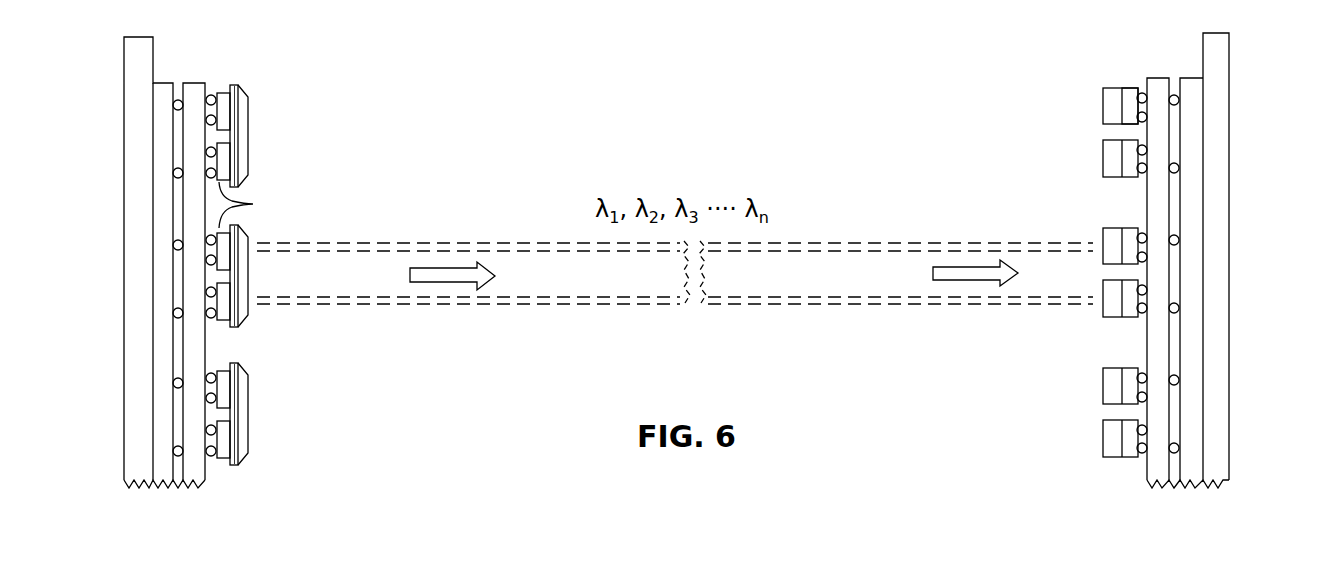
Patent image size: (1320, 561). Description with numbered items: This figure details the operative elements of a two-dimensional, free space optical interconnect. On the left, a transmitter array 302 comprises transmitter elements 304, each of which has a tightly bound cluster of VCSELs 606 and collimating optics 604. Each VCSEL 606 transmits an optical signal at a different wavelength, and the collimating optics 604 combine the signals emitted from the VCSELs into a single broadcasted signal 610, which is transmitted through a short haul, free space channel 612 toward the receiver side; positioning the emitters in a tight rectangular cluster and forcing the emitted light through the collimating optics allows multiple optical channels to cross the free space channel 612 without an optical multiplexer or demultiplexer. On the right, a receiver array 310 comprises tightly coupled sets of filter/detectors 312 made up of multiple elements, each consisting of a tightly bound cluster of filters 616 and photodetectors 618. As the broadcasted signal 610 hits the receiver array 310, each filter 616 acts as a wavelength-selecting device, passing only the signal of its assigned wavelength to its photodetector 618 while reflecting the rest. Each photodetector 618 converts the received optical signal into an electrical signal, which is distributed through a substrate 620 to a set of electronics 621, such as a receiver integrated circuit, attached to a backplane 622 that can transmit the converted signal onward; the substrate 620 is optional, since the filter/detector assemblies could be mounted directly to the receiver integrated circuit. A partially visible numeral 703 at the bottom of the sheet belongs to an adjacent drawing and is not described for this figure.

The transmitter array 302 is at (205, 65).
The transmitter element 304 is at (274, 275).
The collimating optics 604 is at (250, 156).
The VCSEL 606 is at (253, 204).
The broadcasted signal 610 is at (447, 282).
The free space channel 612 is at (852, 303).
The receiver array 310 is at (1143, 291).
The filter/detector 312 is at (1083, 157).
The filter 616 is at (1102, 103).
The photodetector 618 is at (1130, 92).
The substrate 620 is at (1155, 336).
The electronics 621 is at (1193, 408).
The backplane 622 is at (1215, 297).
The reference numeral (adjacent figure) 703 is at (236, 555).